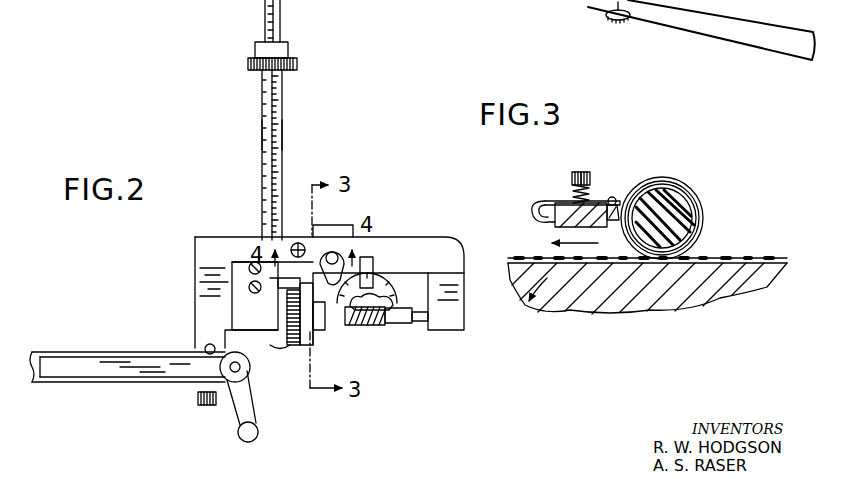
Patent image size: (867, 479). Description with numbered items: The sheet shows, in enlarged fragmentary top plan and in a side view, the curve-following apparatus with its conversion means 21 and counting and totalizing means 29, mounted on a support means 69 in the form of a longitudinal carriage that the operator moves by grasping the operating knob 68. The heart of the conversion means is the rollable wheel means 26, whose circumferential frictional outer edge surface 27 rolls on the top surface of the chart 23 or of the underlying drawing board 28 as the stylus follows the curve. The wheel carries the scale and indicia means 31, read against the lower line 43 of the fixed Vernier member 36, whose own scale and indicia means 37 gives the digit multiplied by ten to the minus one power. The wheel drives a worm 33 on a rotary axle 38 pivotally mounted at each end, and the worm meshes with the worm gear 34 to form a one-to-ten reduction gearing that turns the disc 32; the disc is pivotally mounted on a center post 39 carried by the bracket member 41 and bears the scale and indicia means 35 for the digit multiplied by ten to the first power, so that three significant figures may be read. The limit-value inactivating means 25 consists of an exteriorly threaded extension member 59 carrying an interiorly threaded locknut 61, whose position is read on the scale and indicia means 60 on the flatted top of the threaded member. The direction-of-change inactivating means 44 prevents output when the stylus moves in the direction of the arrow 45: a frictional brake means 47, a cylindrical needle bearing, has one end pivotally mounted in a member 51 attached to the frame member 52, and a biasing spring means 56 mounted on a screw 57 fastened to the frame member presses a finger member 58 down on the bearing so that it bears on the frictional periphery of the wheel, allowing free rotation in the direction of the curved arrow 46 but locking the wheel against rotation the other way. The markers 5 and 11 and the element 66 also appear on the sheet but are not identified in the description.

In FIG. 2, the threaded shaft 5 is at (282, 7).
In FIG. 2, the locknut 61 is at (298, 63).
In FIG. 2, the limit-value inactivating means 25 is at (305, 70).
In FIG. 2, the scale and indicia means 60 is at (272, 122).
In FIG. 2, the exteriorly threaded extension member 59 is at (283, 133).
In FIG. 2, the conversion means 21 is at (362, 197).
In FIG. 2, the direction-of-change inactivating means 44 is at (315, 276).
In FIG. 3, the direction-of-change inactivating means 44 is at (620, 191).
In FIG. 2, the frame member 52 is at (245, 263).
In FIG. 3, the frame member 52 is at (562, 207).
In FIG. 2, the member 51 is at (270, 282).
In FIG. 2, the arrow 45 is at (110, 287).
In FIG. 3, the arrow 45 is at (566, 262).
In FIG. 2, the fixed Vernier member 36 is at (272, 312).
In FIG. 2, the scale and indicia means 37 is at (287, 328).
In FIG. 2, the lower line 43 is at (282, 333).
In FIG. 2, the scale and indicia means 31 is at (300, 337).
In FIG. 2, the rollable wheel means 26 is at (319, 341).
In FIG. 3, the rollable wheel means 26 is at (695, 205).
In FIG. 2, the counting and totalizing means 29 is at (325, 340).
In FIG. 2, the circumferential frictional outer edge surface 27 is at (302, 347).
In FIG. 3, the circumferential frictional outer edge surface 27 is at (706, 238).
In FIG. 2, the worm 33 is at (386, 326).
In FIG. 2, the rotary axle 38 is at (405, 322).
In FIG. 2, the disc 32 is at (395, 302).
In FIG. 2, the worm gear 34 is at (400, 307).
In FIG. 2, the center post 39 is at (371, 298).
In FIG. 2, the scale and indicia means 35 is at (394, 300).
In FIG. 2, the bracket member 41 is at (370, 256).
In FIG. 2, the finger member 58 is at (327, 283).
In FIG. 3, the finger member 58 is at (612, 198).
In FIG. 2, the screw 57 is at (333, 250).
In FIG. 3, the screw 57 is at (589, 196).
In FIG. 2, the section line 11- 11 is at (48, 367).
In FIG. 2, the support means 69 is at (66, 397).
In FIG. 2, the operating knob 68 is at (200, 393).
In FIG. 3, the drawing board 28 is at (740, 284).
In FIG. 3, the chart 23 is at (519, 256).
In FIG. 3, the biasing spring means 56 is at (572, 196).
In FIG. 3, the curved arrow 46 is at (720, 194).
In FIG. 3, the frictional brake means 47 is at (606, 238).
In FIG. 3, the knob 66 is at (600, 1).